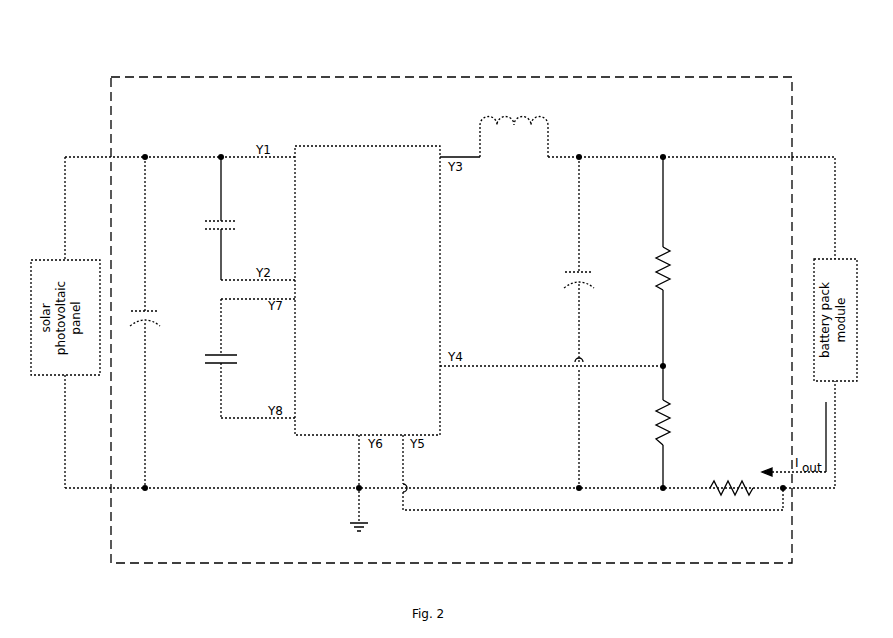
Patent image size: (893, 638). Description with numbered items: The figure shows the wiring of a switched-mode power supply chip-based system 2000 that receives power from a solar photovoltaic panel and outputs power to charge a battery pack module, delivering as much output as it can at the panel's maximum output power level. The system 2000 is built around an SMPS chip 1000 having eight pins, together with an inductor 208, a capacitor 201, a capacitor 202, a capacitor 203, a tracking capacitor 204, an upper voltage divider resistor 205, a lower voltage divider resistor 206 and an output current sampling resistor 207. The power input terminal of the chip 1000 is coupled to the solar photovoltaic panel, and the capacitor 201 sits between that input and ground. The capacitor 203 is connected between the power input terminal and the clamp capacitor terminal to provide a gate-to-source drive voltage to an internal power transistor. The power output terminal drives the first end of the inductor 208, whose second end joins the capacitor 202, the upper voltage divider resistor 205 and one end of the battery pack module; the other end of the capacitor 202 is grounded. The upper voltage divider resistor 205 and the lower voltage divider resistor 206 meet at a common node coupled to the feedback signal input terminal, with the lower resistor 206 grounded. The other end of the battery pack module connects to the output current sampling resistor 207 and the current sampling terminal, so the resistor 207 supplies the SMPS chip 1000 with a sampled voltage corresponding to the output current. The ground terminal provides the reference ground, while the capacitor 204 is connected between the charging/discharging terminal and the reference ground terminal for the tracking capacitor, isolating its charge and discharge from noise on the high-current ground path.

The SMPS chip-based system 2000 is at (316, 77).
The SMPS chip 1000 is at (367, 290).
The capacitor 201 is at (160, 322).
The capacitor 202 is at (595, 322).
The capacitor 203 is at (235, 218).
The tracking capacitor 204 is at (235, 358).
The upper voltage divider resistor 205 is at (679, 261).
The lower voltage divider resistor 206 is at (679, 427).
The output current sampling resistor 207 is at (731, 479).
The inductor 208 is at (514, 146).